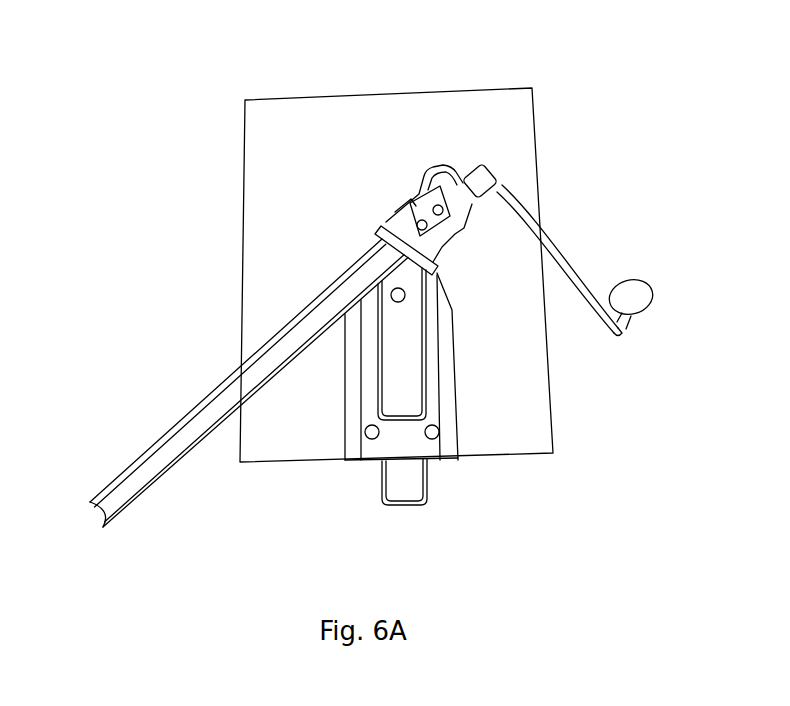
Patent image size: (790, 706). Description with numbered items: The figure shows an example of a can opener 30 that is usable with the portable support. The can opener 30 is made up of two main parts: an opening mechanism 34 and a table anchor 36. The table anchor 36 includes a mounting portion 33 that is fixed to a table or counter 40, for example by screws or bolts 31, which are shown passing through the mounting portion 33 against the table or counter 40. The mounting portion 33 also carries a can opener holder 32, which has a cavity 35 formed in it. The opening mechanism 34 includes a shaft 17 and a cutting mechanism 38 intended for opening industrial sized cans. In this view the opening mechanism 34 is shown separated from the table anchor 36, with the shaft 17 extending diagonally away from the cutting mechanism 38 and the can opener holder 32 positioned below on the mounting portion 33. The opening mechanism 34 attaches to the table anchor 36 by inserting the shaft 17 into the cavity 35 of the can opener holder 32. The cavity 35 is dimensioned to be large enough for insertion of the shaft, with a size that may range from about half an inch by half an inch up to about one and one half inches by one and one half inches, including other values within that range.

The shaft 17 is at (202, 428).
The can opener 30 is at (328, 423).
The screws or bolts 31 is at (362, 440).
The can opener holder 32 is at (427, 505).
The mounting portion 33 is at (375, 455).
The opening mechanism 34 is at (392, 193).
The cavity 35 is at (405, 480).
The table anchor 36 is at (430, 412).
The cutting mechanism 38 is at (425, 277).
The table or counter 40 is at (513, 130).